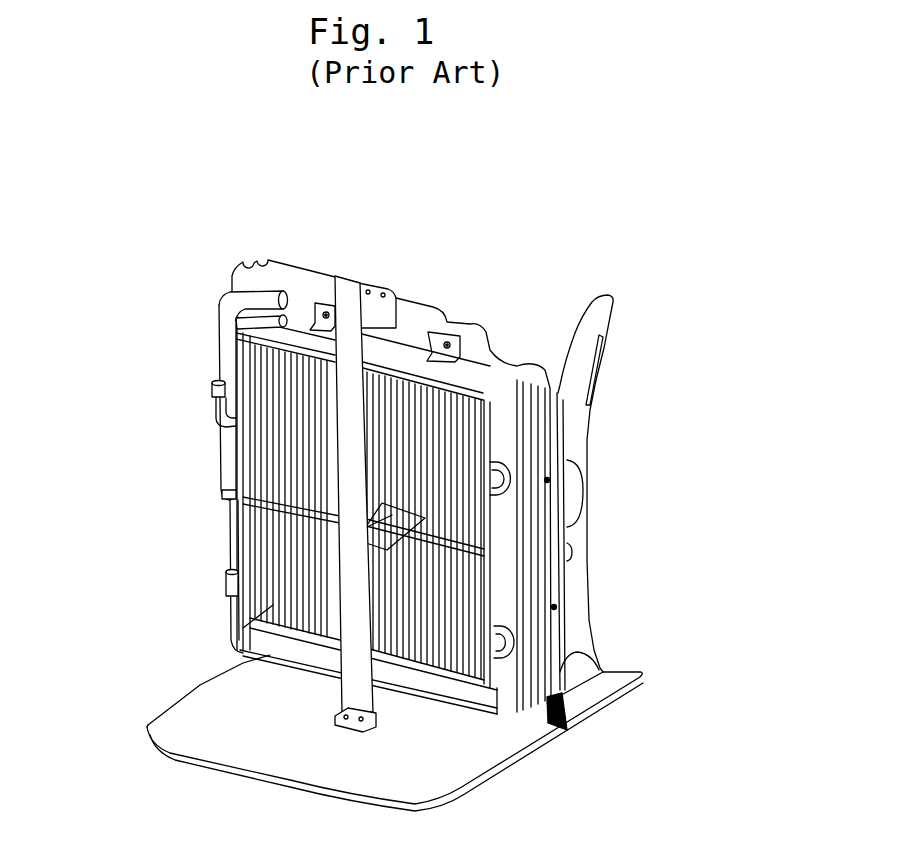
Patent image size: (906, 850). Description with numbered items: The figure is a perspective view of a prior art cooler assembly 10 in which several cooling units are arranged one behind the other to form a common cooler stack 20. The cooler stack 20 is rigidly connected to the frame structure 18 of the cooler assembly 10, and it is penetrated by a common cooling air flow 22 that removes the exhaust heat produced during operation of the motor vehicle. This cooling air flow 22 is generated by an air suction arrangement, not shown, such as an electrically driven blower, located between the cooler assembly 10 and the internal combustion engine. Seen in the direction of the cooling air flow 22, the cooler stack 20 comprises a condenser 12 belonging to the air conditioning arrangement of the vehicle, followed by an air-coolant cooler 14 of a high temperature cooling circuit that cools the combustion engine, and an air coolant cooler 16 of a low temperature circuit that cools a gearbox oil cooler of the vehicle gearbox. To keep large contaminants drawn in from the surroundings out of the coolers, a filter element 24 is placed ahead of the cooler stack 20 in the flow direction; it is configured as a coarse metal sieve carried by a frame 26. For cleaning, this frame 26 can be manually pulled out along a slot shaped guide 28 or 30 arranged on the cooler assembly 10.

The cooler assembly 10 is at (418, 488).
The condenser 12 is at (517, 604).
The air-coolant cooler 14 is at (550, 506).
The air coolant cooler 16 is at (550, 506).
The frame structure 18 is at (588, 405).
The cooler stack 20 is at (558, 725).
The cooling air flow 22 is at (357, 541).
The filter element 24 is at (222, 445).
The frame 26 is at (240, 500).
The slot shaped guide 28 is at (243, 339).
The slot shaped guide 30 is at (200, 670).